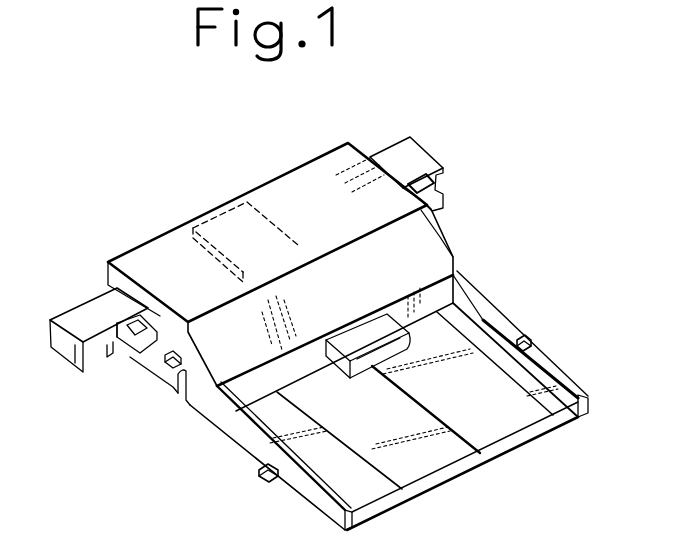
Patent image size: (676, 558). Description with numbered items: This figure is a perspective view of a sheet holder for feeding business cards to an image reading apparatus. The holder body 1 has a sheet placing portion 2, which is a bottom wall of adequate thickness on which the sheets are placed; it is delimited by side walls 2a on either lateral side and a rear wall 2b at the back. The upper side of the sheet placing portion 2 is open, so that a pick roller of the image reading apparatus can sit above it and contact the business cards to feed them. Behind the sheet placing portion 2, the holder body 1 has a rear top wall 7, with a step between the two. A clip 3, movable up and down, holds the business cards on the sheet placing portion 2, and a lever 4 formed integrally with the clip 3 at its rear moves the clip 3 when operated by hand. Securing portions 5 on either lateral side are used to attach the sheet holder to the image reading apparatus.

The holder body 1 is at (334, 146).
The sheet placing portion 2 is at (485, 396).
The side walls 2a is at (238, 435).
The rear wall 2b is at (441, 293).
The clip 3 is at (370, 340).
The lever 4 is at (238, 204).
The securing portions 5 is at (88, 315).
The rear top wall 7 is at (283, 187).